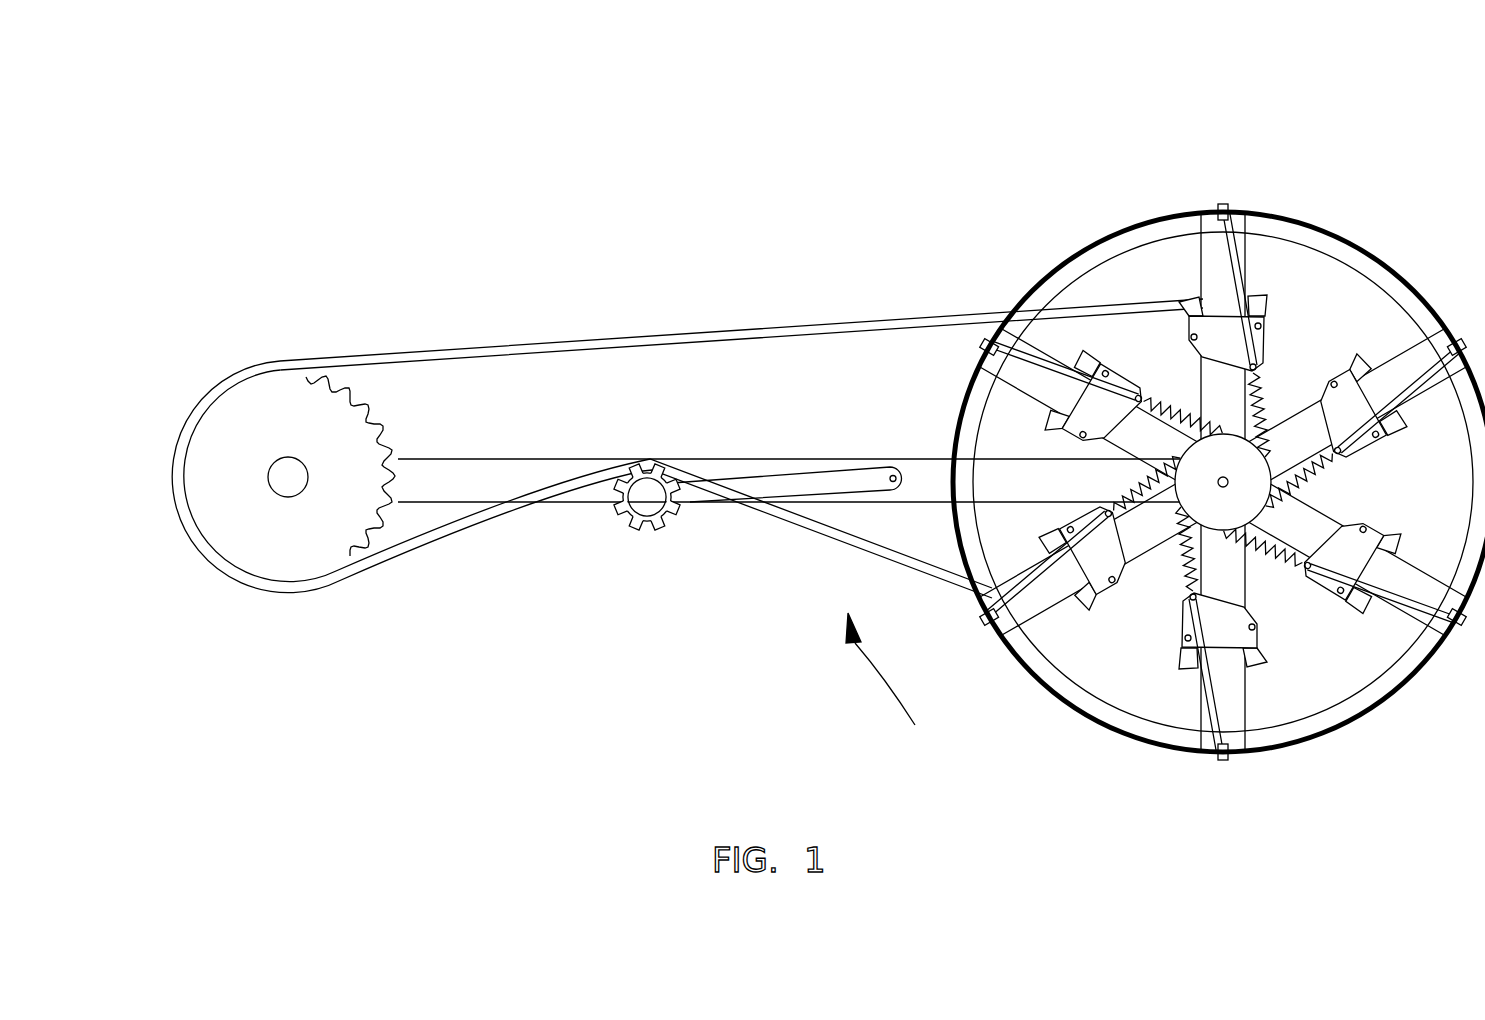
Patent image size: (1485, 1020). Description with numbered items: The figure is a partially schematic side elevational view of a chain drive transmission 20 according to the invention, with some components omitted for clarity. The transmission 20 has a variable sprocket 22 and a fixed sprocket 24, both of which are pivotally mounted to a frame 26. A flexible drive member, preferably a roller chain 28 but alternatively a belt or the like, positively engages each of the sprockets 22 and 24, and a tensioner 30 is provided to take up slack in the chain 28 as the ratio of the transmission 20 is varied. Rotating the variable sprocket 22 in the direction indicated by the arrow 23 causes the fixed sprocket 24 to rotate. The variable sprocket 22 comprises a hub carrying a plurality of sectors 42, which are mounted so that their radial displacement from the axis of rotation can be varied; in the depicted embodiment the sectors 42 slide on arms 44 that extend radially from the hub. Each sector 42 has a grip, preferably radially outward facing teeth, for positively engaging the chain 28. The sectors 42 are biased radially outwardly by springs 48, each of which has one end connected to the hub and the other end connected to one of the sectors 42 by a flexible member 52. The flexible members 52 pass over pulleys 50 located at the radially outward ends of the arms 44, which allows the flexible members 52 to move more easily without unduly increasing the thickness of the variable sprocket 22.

The chain drive transmission 20 is at (781, 148).
The variable sprocket 22 is at (1160, 452).
The arrow 23 is at (860, 695).
The fixed sprocket 24 is at (318, 418).
The frame 26 is at (473, 477).
The roller chain 28 is at (437, 340).
The tensioner 30 is at (645, 498).
The sectors 42 is at (1100, 408).
The arms 44 is at (1208, 285).
The springs 48 is at (1190, 587).
The pulleys 50 is at (985, 340).
The flexible members 52 is at (1072, 372).